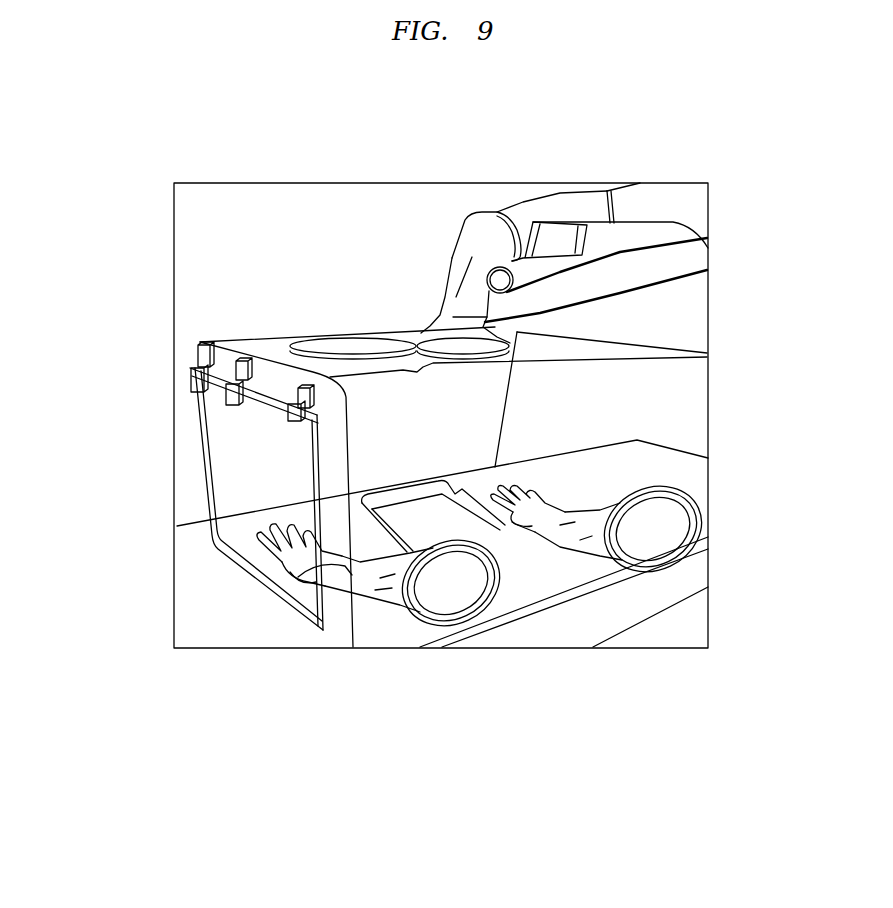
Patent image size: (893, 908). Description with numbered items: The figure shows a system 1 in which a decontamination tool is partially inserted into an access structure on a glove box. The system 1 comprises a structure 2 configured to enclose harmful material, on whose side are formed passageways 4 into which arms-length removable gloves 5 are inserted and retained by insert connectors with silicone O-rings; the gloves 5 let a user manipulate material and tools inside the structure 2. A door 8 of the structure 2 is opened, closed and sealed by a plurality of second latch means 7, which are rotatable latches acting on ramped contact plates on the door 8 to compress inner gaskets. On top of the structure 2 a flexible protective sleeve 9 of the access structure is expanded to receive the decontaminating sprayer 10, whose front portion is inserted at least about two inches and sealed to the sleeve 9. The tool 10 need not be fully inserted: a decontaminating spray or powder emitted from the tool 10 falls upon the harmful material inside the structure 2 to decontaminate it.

The system 1 is at (128, 662).
The structure configured to enclose harmful material 2 is at (678, 402).
The passageway 4 is at (590, 522).
The removable gloves 5 is at (630, 553).
The second latch means 7 is at (313, 580).
The door 8 is at (258, 467).
The flexible protective sleeve 9 is at (703, 269).
The decontaminating sprayer 10 is at (700, 230).